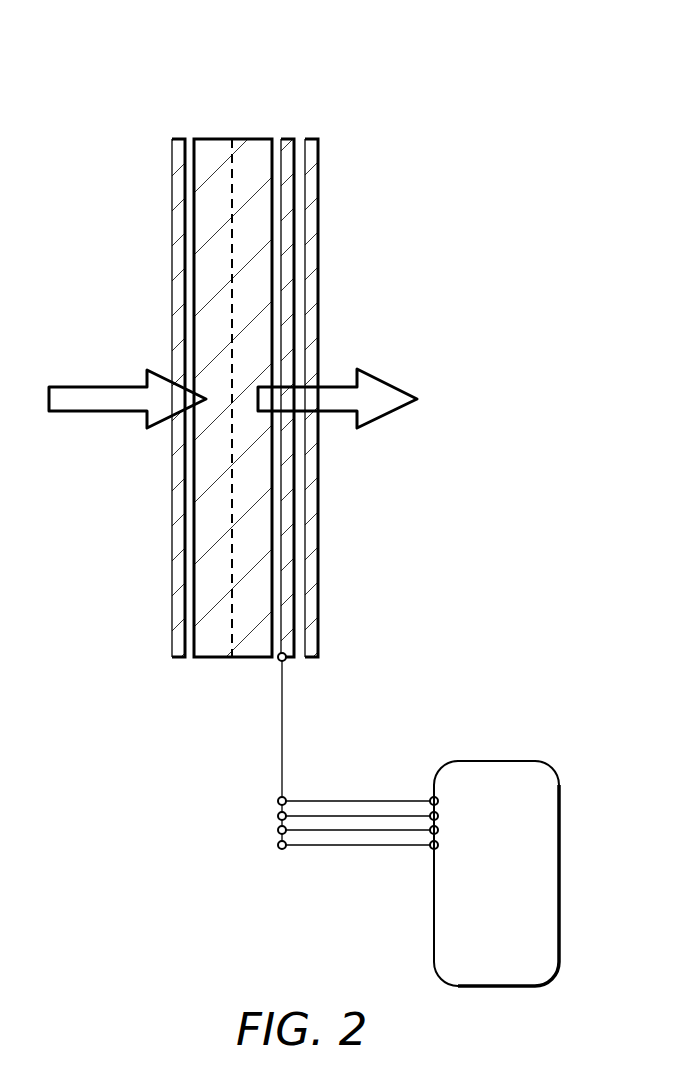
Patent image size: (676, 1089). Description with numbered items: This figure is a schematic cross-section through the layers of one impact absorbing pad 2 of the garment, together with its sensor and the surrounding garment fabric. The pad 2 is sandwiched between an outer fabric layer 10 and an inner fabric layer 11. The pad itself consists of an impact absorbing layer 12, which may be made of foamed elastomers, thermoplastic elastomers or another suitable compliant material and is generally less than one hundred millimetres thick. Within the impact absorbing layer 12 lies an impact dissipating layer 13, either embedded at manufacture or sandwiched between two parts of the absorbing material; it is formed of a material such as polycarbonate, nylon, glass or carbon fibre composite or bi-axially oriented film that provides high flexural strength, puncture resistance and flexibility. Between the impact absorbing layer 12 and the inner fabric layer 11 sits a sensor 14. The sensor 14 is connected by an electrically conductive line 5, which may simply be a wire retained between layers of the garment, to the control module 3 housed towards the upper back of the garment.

The impact absorbing pad 2 is at (206, 703).
The control module 3 is at (418, 873).
The electrically conductive line 5 is at (284, 729).
The outer fabric layer 10 is at (172, 592).
The inner fabric layer 11 is at (318, 590).
The impact absorbing layer 12 is at (207, 139).
The impact dissipating layer 13 is at (232, 232).
The sensor 14 is at (296, 500).